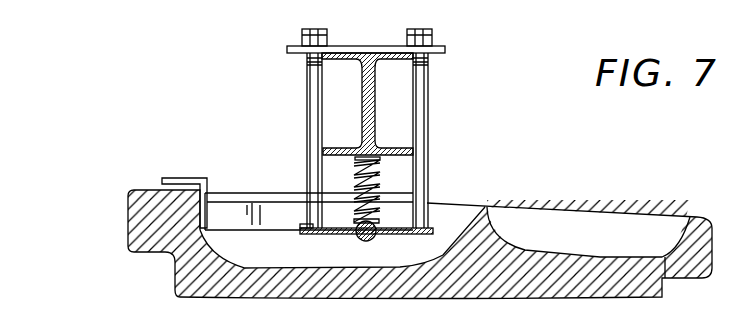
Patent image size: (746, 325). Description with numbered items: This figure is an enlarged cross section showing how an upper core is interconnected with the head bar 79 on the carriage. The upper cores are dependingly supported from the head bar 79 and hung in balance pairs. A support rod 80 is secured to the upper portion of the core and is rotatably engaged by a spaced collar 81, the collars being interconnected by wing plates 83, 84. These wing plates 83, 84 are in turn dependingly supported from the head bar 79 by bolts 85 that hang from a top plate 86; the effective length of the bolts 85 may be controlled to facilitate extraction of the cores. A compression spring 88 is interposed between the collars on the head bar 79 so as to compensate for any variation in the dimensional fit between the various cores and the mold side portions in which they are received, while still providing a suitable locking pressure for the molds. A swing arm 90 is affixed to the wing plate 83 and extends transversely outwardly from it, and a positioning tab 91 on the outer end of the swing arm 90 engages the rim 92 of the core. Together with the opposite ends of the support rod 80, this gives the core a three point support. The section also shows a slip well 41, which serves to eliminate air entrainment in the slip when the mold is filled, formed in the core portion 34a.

The base body section 34a is at (128, 215).
The rim 92 is at (135, 190).
The positioning tab 91 is at (178, 182).
The swing arm 90 is at (232, 210).
The top plate 86 is at (360, 50).
The bolts 85 is at (308, 103).
The head bar 79 is at (377, 90).
The compression spring 88 is at (357, 181).
The collar 81 is at (358, 240).
The support rod 80 is at (373, 241).
The wing plate 83 is at (301, 234).
The wing plate 84 is at (420, 234).
The slip well 41 is at (600, 225).